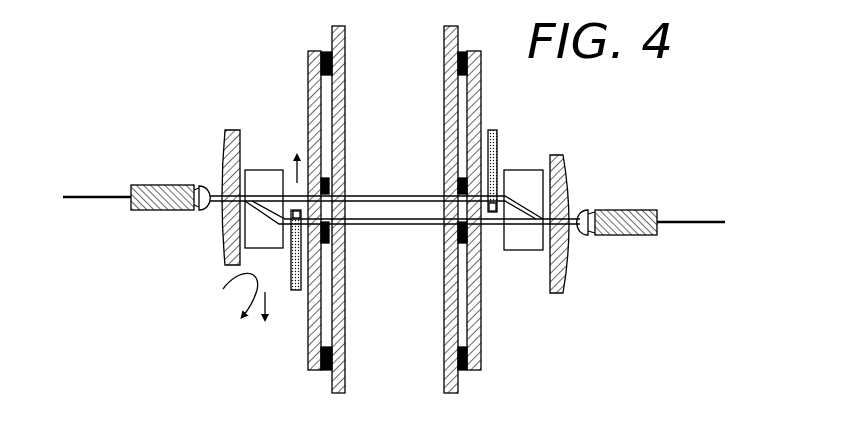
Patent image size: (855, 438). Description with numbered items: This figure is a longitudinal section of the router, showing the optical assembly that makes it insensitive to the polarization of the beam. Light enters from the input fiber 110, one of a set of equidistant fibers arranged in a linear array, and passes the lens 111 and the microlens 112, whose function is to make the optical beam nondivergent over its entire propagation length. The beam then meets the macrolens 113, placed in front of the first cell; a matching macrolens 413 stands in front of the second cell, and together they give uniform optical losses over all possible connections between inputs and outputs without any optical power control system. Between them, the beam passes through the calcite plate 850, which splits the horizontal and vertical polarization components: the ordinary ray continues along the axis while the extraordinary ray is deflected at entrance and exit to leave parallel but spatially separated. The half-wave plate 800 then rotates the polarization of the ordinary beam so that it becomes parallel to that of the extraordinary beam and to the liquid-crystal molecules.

The input fiber 110 is at (77, 193).
The lens 111 is at (157, 204).
The microlens 112 is at (203, 190).
The macrolens 113 is at (228, 130).
The calcite plate 850 is at (263, 182).
The half-wave plate 800 is at (295, 292).
The macrolens 413 is at (558, 155).